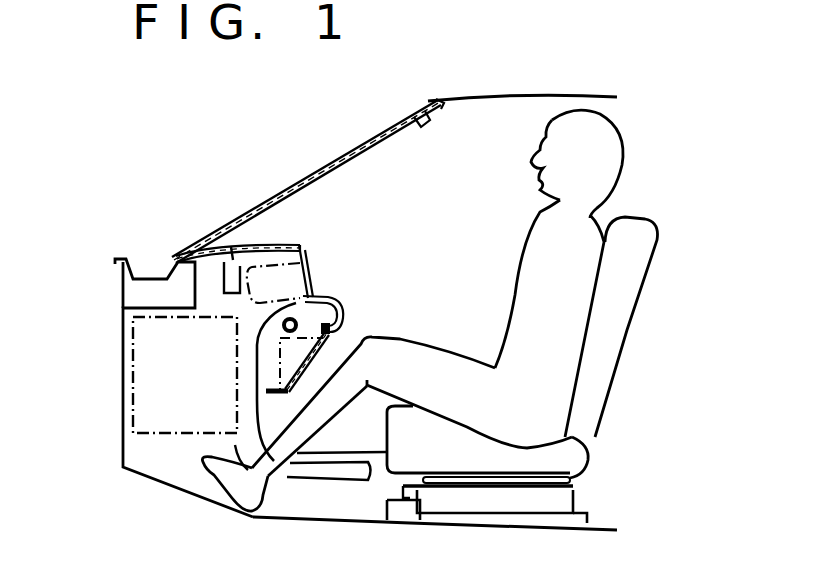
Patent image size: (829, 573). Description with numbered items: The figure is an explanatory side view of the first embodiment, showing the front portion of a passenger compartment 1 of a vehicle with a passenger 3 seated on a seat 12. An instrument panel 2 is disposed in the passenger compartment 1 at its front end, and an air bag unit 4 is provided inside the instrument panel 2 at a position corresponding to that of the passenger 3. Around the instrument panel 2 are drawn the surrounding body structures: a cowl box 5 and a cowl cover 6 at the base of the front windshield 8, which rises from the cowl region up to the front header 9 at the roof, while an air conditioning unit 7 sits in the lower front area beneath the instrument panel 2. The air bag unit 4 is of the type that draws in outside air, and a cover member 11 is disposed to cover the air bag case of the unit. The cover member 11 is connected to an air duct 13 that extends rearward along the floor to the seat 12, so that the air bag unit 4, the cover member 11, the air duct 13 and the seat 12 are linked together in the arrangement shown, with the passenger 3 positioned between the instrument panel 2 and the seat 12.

The passenger compartment 1 is at (436, 193).
The instrument panel 2 is at (301, 237).
The passenger 3 is at (602, 159).
The air bag unit 4 is at (310, 278).
The cowl box 5 is at (143, 297).
The cowl cover 6 is at (230, 243).
The air conditioning unit 7 is at (148, 376).
The front windshield 8 is at (318, 170).
The front header 9 is at (427, 100).
The cover member 11 is at (340, 317).
The seat 12 is at (565, 467).
The air duct 13 is at (332, 473).